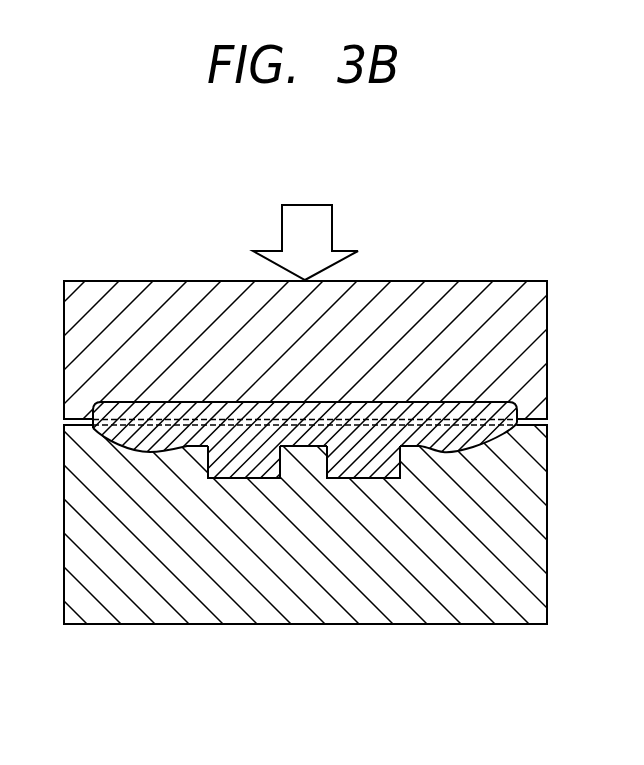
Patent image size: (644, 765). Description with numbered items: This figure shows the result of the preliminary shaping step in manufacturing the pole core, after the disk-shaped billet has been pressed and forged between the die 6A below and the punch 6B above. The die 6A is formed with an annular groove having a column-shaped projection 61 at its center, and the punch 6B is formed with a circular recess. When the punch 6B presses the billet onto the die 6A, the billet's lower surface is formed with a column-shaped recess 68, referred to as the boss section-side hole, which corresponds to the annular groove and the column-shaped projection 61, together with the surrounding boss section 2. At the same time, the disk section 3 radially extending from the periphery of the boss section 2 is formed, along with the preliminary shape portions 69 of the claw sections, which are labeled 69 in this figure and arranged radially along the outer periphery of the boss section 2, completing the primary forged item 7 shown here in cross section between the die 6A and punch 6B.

The boss section 2 is at (242, 467).
The disk section 3 is at (200, 412).
The die 6A is at (546, 629).
The punch 6B is at (549, 278).
The primary forged item 7 is at (519, 407).
The column-shaped projection 61 is at (310, 458).
The column-shaped recess 68 is at (300, 462).
The thickened portion (4) 69 is at (142, 433).